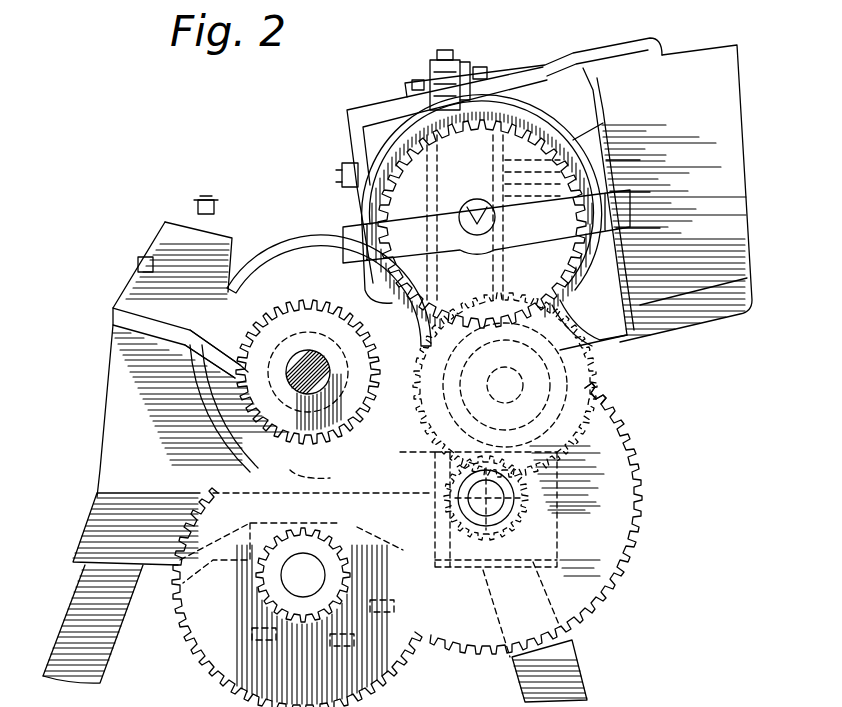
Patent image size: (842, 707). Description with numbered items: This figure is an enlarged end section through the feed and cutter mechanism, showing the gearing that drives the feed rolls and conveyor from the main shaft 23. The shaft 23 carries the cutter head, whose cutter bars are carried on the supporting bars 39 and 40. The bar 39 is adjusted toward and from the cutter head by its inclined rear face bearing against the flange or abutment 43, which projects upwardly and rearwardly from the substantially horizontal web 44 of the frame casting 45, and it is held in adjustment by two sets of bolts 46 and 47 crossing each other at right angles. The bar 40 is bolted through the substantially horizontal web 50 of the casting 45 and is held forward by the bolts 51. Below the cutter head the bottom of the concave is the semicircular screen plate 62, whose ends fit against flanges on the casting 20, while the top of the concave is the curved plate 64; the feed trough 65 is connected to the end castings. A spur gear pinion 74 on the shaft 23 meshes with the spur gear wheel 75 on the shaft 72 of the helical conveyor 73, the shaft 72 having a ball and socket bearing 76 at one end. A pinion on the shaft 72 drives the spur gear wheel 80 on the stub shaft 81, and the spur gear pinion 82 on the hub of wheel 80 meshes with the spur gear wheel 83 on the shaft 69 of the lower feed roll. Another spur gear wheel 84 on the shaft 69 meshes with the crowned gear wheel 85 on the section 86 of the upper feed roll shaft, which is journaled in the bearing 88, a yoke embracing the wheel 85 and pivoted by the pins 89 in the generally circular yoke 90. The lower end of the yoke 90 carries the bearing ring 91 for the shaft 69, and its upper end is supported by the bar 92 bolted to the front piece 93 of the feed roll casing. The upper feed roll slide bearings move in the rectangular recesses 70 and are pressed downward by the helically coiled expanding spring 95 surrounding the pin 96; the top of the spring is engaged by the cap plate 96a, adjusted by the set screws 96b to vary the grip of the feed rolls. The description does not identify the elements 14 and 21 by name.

The frame arm 14 is at (250, 330).
The casting 20 is at (85, 518).
The support leg 21 is at (113, 650).
The shaft 23 is at (310, 350).
The supporting bar 39 is at (222, 220).
The supporting bar 40 is at (434, 448).
The flange or abutment 43 is at (142, 280).
The web 44 is at (118, 310).
The frame casting 45 is at (113, 322).
The bolts 46 is at (140, 262).
The bolts 47 is at (208, 200).
The web 50 is at (458, 490).
The bolts 51 is at (488, 510).
The screen plate 62 is at (180, 400).
The curved plate 64 is at (300, 242).
The feed trough 65 is at (690, 58).
The shaft 69 is at (620, 352).
The rectangular recesses 70 is at (500, 182).
The shaft 72 is at (295, 560).
The helical conveyor 73 is at (252, 638).
The spur gear pinion 74 is at (336, 648).
The spur gear wheel 75 is at (212, 472).
The ball and socket bearing 76 is at (380, 614).
The spur gear wheel 80 is at (472, 650).
The stub shaft 81 is at (430, 258).
The spur gear pinion 82 is at (545, 507).
The spur gear wheel 83 is at (605, 373).
The spur gear wheel 84 is at (575, 322).
The crowned gear wheel 85 is at (624, 226).
The shaft section 86 is at (496, 218).
The bearing 88 is at (612, 163).
The pins 89 is at (622, 193).
The yoke 90 is at (603, 123).
The bearing ring 91 is at (606, 392).
The bar 92 is at (343, 168).
The front piece 93 is at (350, 122).
The helically coiled expanding spring 95 is at (505, 80).
The pin 96 is at (447, 50).
The cap plate 96a is at (468, 62).
The set screws 96b is at (412, 85).